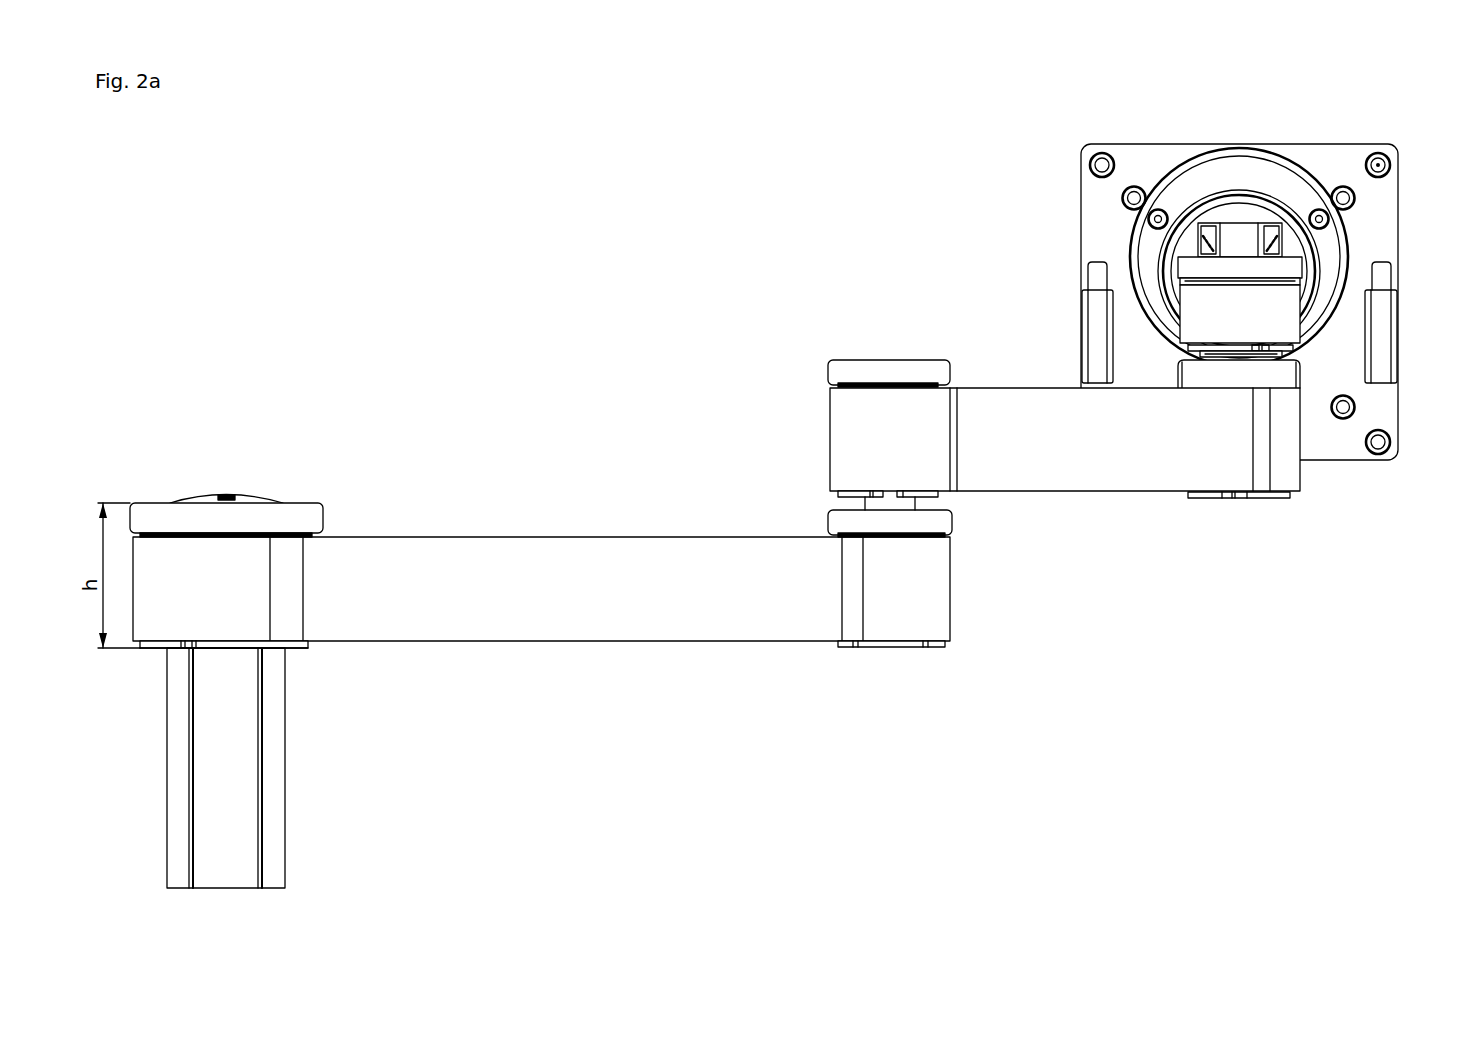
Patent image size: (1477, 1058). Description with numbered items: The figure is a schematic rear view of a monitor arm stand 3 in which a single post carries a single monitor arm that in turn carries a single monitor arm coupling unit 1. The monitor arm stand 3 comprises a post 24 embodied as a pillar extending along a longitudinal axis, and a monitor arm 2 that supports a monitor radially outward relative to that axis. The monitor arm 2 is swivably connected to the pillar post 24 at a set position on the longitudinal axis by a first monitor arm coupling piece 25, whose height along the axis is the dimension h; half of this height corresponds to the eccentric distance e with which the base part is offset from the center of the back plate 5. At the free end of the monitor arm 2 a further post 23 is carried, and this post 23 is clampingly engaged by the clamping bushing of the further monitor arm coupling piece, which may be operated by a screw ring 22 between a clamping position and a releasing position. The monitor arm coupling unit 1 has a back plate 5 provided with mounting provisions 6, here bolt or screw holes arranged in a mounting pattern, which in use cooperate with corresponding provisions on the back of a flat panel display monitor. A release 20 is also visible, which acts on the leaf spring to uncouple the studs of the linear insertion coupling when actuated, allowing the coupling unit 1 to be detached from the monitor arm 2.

The monitor arm coupling unit 1 is at (1209, 263).
The monitor arm 2 is at (1072, 738).
The monitor arm stand 3 is at (886, 299).
The back plate 5 is at (1136, 166).
The mounting provisions 6 is at (1382, 158).
The release 20 is at (1293, 229).
The screw ring 22 is at (1243, 265).
The post 23 is at (888, 503).
The post 24 is at (275, 845).
The first monitor arm coupling piece 25 is at (138, 666).